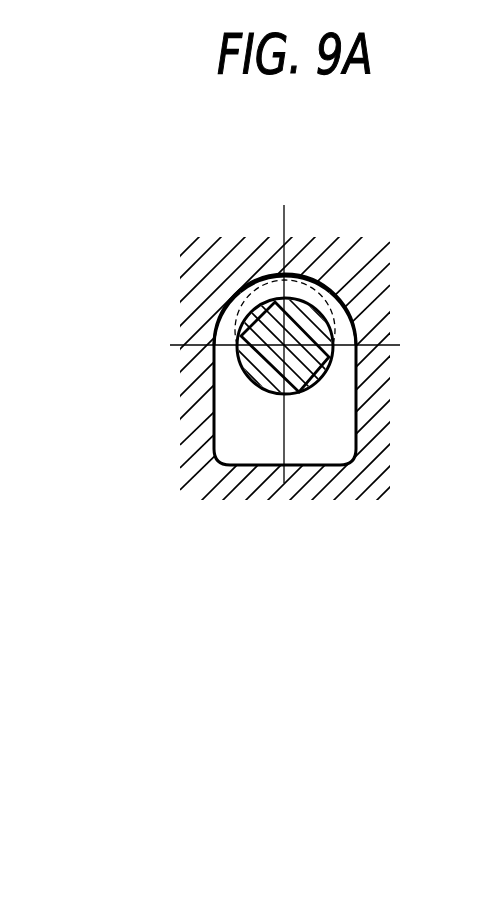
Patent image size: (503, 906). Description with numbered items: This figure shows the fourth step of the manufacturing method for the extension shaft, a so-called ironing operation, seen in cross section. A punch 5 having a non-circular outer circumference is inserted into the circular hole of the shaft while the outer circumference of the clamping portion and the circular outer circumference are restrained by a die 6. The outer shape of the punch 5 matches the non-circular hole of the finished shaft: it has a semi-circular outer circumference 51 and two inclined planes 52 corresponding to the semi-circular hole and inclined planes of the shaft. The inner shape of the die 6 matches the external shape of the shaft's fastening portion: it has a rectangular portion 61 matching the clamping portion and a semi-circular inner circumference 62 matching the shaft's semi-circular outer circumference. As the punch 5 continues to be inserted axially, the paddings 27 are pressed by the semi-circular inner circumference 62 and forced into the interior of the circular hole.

The punch 5 is at (350, 394).
The die 6 is at (251, 214).
The paddings 27 is at (245, 292).
The semi-circular outer circumference 51 is at (252, 390).
The inclined planes 52 is at (250, 310).
The rectangular portion 61 is at (258, 468).
The semi-circular inner circumference 62 is at (297, 278).